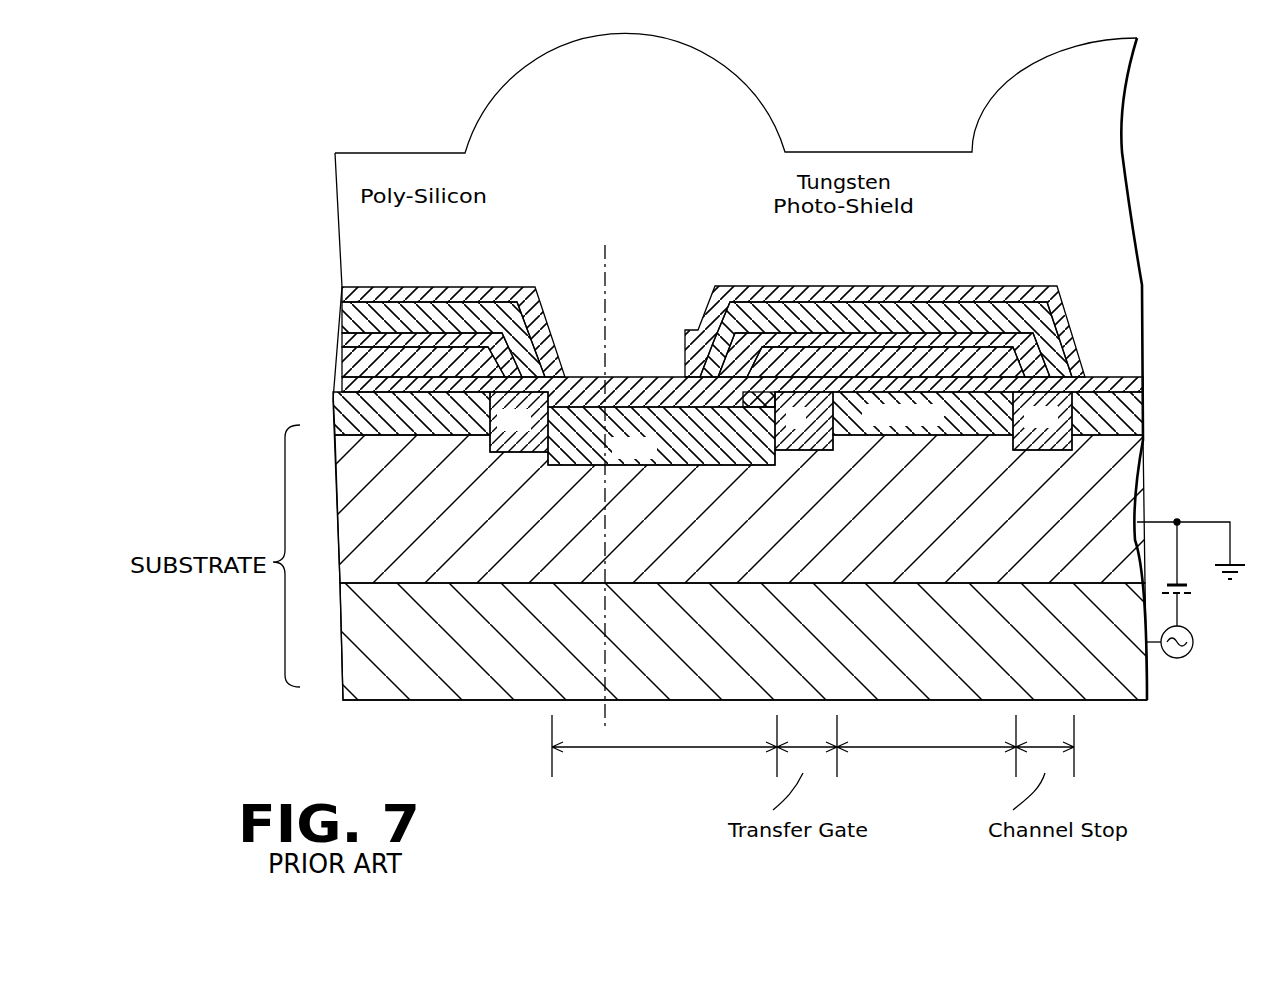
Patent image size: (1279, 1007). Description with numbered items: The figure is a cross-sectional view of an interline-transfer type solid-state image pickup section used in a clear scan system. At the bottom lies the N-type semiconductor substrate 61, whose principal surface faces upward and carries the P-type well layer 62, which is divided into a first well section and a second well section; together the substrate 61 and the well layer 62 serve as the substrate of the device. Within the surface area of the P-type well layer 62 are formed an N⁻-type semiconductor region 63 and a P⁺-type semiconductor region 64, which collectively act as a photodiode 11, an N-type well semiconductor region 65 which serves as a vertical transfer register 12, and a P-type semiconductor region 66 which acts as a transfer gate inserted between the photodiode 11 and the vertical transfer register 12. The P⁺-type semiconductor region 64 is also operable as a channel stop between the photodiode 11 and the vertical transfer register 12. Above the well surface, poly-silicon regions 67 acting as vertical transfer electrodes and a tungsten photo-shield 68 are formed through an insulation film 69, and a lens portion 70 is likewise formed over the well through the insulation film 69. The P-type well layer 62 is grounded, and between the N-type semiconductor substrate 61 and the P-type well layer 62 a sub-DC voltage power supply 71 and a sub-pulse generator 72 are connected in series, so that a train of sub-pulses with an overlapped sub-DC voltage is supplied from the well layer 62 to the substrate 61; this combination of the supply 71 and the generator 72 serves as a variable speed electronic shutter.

The photodiode 11 is at (664, 762).
The vertical transfer register 12 is at (926, 762).
The N-type semiconductor substrate 61 is at (377, 693).
The P-type well layer 62 is at (347, 493).
The N⁻-type semiconductor region 63 is at (540, 465).
The P⁺-type semiconductor region 64 is at (1130, 385).
The N-type well semiconductor region 65 is at (333, 412).
The P-type semiconductor region 66 is at (860, 342).
The poly-silicon region 67 is at (418, 360).
The tungsten photo-shield 68 is at (848, 320).
The insulation film 69 is at (1068, 325).
The lens portion 70 is at (738, 121).
The sub-DC voltage power supply 71 is at (1195, 557).
The sub-pulse generator 72 is at (1175, 662).